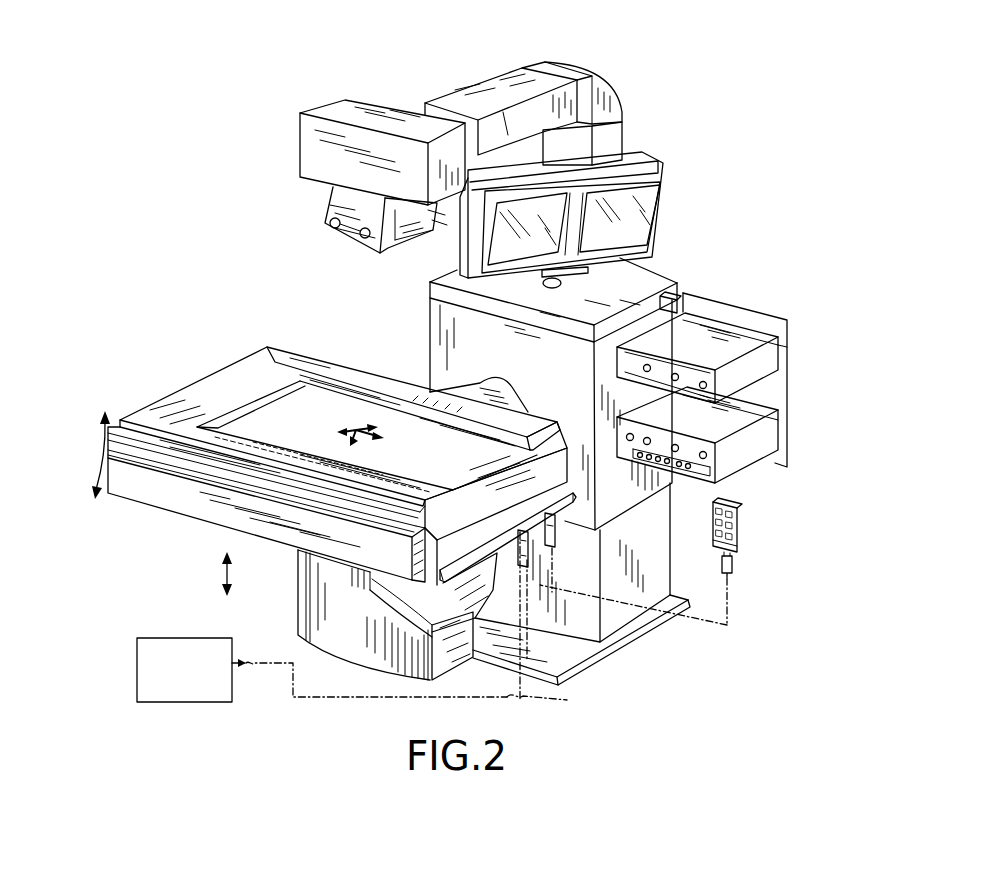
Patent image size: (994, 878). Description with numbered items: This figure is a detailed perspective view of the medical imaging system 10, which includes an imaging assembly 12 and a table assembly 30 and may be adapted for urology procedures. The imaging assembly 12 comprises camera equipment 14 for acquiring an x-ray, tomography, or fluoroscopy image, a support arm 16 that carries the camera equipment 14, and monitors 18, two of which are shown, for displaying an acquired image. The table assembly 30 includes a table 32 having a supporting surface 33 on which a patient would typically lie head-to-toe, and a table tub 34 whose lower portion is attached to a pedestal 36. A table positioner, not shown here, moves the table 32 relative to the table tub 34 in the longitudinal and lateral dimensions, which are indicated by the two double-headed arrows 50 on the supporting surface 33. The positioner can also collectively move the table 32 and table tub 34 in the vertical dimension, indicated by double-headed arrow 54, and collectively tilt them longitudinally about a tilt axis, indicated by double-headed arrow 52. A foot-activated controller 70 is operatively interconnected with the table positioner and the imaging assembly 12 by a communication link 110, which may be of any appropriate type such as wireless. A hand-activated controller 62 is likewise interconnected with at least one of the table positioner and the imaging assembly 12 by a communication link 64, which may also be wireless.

The medical imaging system 10 is at (742, 93).
The imaging assembly 12 is at (222, 178).
The camera equipment 14 is at (400, 236).
The support arm 16 is at (617, 99).
The monitors 18 is at (593, 243).
The table assembly 30 is at (278, 334).
The table 32 is at (231, 361).
The supporting surface 33 is at (449, 467).
The table tub 34 is at (204, 508).
The pedestal 36 is at (362, 639).
The double-headed arrow 50 is at (356, 430).
The double-headed arrow 52 is at (97, 443).
The double-headed arrow 54 is at (229, 573).
The hand-activated controller 62 is at (738, 528).
The communication link 64 is at (711, 623).
The foot-activated controller 70 is at (181, 703).
The communication link 110 is at (540, 699).